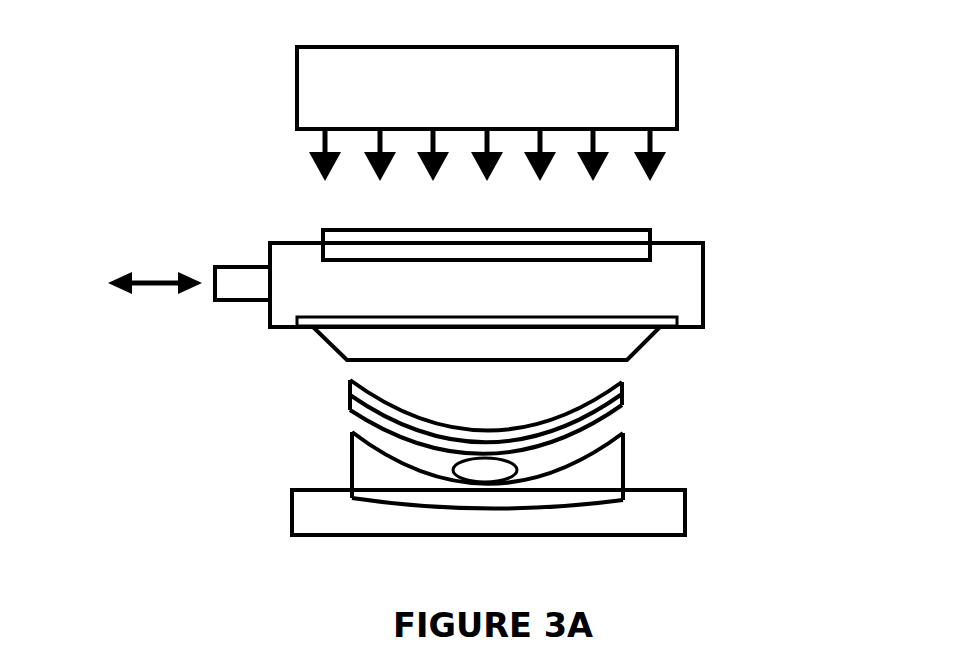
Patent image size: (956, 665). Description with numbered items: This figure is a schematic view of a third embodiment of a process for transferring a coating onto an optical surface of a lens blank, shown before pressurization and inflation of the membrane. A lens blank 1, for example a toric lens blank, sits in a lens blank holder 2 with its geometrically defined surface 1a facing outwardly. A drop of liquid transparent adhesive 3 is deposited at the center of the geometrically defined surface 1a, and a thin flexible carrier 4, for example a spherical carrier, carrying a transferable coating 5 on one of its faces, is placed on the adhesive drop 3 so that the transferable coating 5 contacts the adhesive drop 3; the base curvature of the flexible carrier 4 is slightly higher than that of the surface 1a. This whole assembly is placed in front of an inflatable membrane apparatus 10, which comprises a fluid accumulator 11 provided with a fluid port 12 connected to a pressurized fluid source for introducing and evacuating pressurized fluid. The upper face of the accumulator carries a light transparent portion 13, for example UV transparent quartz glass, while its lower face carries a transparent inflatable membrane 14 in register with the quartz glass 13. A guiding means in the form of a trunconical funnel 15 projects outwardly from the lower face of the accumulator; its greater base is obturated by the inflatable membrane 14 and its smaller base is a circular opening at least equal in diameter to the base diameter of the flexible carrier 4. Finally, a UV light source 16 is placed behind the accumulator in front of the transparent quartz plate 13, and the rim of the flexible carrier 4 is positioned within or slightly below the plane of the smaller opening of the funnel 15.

The lens blank 1 is at (623, 463).
The geometrically defined surface 1a is at (376, 442).
The lens blank holder 2 is at (292, 500).
The liquid transparent adhesive drop 3 is at (596, 437).
The flexible carrier 4 is at (623, 382).
The transferable coating 5 is at (623, 408).
The inflatable membrane apparatus 10 is at (248, 233).
The fluid accumulator 11 is at (290, 252).
The fluid port 12 is at (215, 267).
The light transparent portion 13 is at (650, 232).
The transparent inflatable membrane 14 is at (673, 312).
The guiding means (trunconical funnel) 15 is at (328, 347).
The UV light source 16 is at (677, 77).